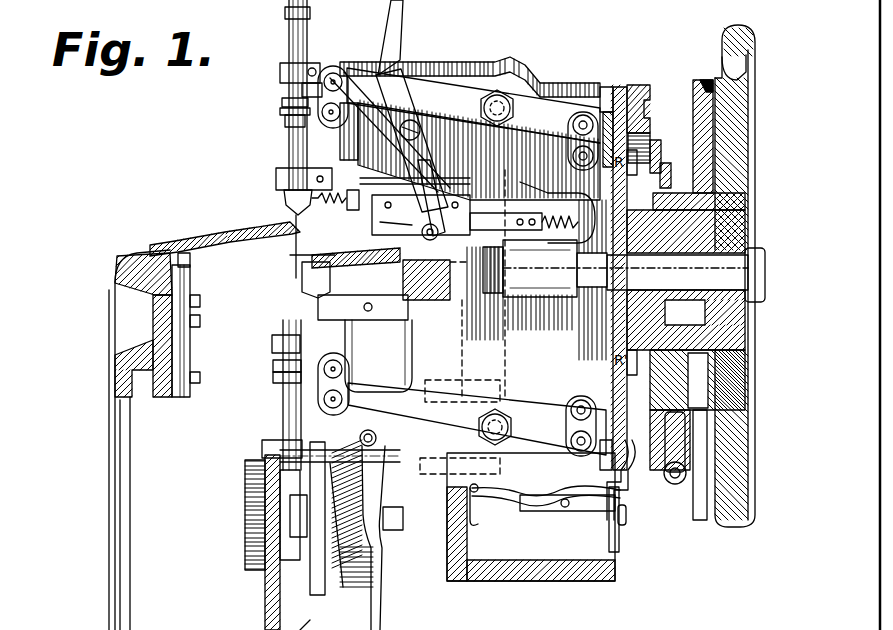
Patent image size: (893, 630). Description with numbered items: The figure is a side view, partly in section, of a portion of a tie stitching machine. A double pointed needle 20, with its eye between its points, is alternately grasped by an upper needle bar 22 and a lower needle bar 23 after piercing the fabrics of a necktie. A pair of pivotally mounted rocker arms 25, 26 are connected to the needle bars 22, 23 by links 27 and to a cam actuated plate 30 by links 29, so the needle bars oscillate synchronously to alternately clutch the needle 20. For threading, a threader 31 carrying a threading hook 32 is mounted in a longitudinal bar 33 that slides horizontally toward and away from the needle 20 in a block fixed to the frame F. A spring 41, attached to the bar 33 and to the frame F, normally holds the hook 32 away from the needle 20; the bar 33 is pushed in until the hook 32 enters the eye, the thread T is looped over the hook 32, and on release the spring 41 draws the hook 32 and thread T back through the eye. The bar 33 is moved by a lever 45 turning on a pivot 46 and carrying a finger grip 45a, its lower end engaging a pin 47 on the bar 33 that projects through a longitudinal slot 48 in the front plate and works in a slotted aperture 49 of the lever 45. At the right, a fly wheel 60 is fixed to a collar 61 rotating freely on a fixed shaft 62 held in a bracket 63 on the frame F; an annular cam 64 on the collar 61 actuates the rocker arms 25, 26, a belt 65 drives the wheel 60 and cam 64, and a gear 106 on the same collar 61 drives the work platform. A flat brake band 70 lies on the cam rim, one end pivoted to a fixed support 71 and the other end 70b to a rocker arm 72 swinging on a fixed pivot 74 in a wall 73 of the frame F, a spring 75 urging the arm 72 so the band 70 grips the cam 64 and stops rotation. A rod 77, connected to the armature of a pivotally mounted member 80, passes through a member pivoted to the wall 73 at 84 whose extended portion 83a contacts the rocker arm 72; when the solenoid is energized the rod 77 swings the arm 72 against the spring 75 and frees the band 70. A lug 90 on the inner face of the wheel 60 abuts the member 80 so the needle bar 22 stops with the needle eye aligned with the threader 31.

The double pointed needle 20 is at (298, 222).
The upper needle bar 22 is at (290, 138).
The lower needle bar 23 is at (283, 418).
The rocker arm 25 is at (458, 92).
The rocker arm 26 is at (518, 410).
The links 27 is at (345, 100).
The links 29 is at (570, 135).
The cam actuated plate 30 is at (600, 333).
The threader 31 is at (350, 230).
The threading hook 32 is at (336, 228).
The longitudinal bar 33 is at (508, 214).
The spring 41 is at (575, 160).
The lever 45 is at (427, 177).
The finger grip 45a is at (394, 8).
The pivot 46 is at (410, 120).
The pin 47 is at (439, 242).
The longitudinal slot 48 is at (398, 225).
The slotted aperture 49 is at (440, 175).
The fly wheel 60 is at (735, 522).
The collar 61 is at (745, 310).
The fixed shaft 62 is at (745, 255).
The bracket 63 is at (535, 290).
The annular cam 64 is at (661, 155).
The belt 65 is at (705, 80).
The flat brake band 70 is at (645, 133).
The end of brake band 70b is at (735, 420).
The fixed support 71 is at (636, 88).
The rocker arm 72 is at (614, 553).
The wall 73 is at (616, 85).
The fixed pivot 74 is at (636, 450).
The spring 75 is at (622, 528).
The rod 77 is at (555, 508).
The abutment member 80 is at (668, 485).
The extended portion 83a is at (581, 512).
The pivot 84 is at (478, 500).
The lug 90 is at (680, 400).
The gear 106 is at (680, 168).
The frame F is at (500, 66).
The thread T is at (267, 233).